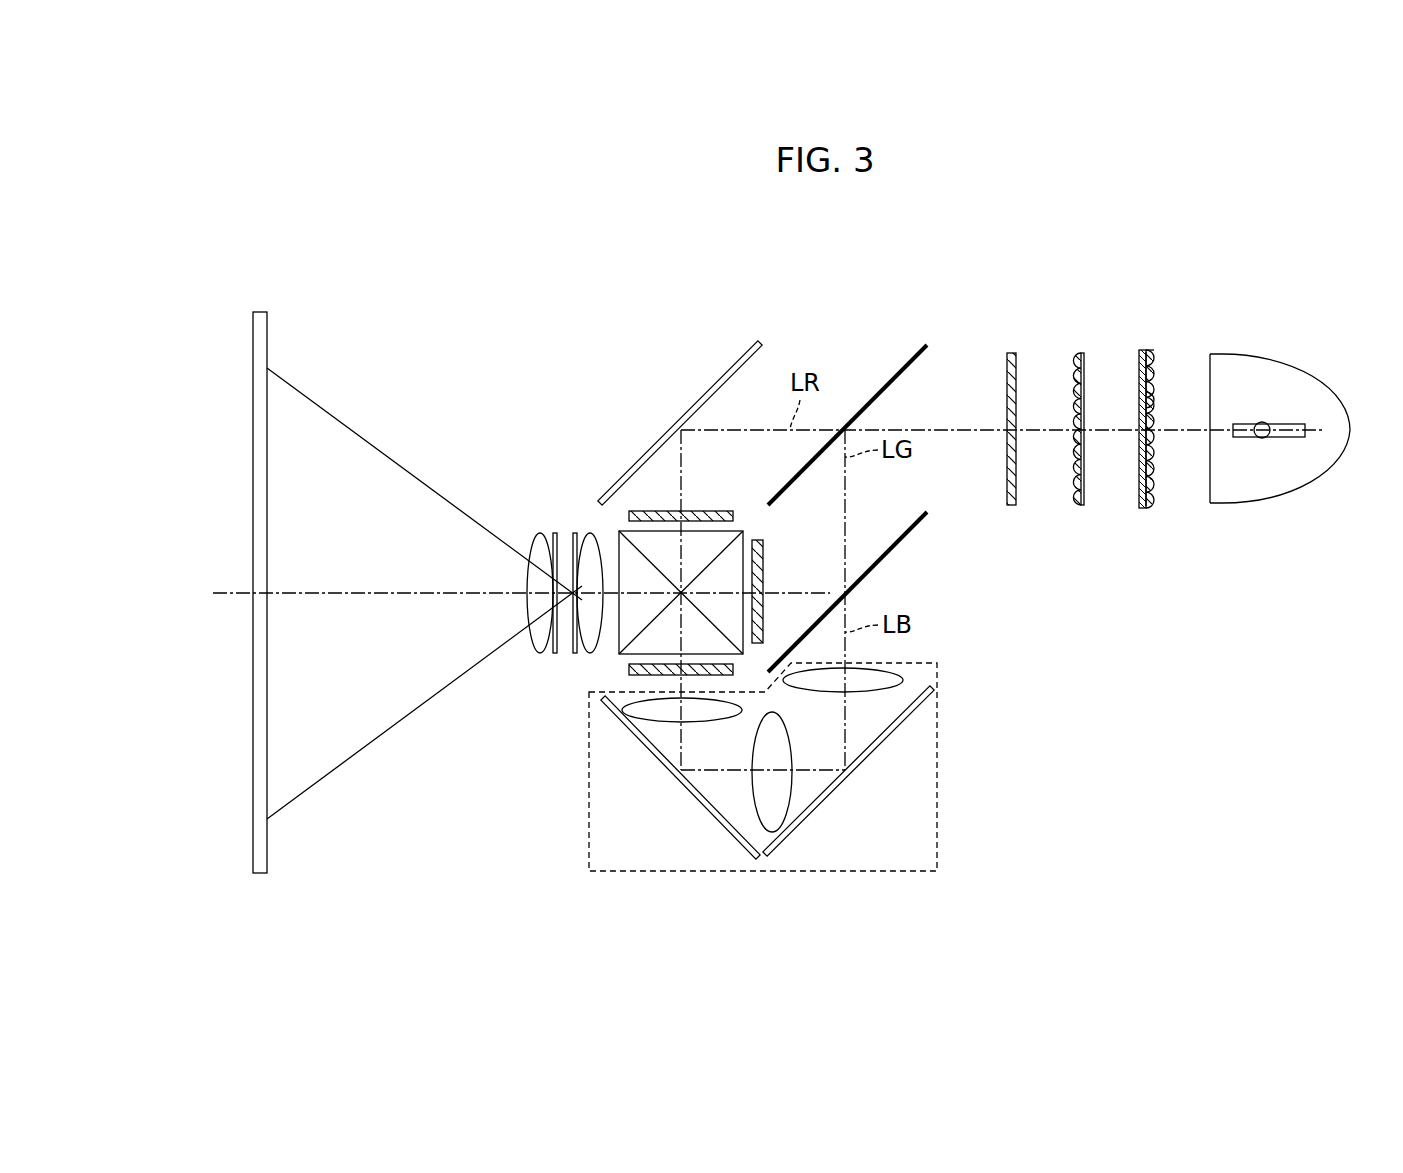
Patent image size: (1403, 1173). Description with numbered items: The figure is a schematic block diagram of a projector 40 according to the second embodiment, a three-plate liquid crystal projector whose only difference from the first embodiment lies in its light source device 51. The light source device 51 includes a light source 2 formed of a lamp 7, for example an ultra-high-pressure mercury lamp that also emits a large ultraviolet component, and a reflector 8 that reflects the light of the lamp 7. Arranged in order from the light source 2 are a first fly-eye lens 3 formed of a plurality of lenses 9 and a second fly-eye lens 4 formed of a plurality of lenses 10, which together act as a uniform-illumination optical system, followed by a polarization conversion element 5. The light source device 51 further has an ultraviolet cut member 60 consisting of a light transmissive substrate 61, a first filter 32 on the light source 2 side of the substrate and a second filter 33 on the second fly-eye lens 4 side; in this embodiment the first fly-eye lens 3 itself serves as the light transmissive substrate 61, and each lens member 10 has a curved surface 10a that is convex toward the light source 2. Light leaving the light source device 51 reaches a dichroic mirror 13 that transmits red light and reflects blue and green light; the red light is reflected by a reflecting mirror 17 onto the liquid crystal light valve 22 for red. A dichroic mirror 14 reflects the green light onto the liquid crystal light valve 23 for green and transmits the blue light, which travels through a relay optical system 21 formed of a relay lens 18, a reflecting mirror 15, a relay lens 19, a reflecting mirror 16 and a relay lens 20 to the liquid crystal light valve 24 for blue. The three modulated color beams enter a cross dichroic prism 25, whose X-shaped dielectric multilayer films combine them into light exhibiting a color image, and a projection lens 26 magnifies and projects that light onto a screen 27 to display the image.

The light source 2 is at (1280, 405).
The first fly-eye lens 3 is at (1173, 452).
The second fly-eye lens 4 is at (1064, 419).
The polarization conversion element 5 is at (1010, 353).
The lamp 7 is at (1262, 440).
The reflector 8 is at (1310, 470).
The lenses 9 is at (1078, 505).
The lenses 10 is at (1150, 352).
The curved surface 10a is at (1154, 400).
The dichroic mirror 13 is at (895, 373).
The dichroic mirror 14 is at (898, 515).
The reflecting mirror 15 is at (898, 720).
The reflecting mirror 16 is at (695, 792).
The reflecting mirror 17 is at (716, 386).
The relay lens 18 is at (893, 683).
The relay lens 19 is at (783, 790).
The relay lens 20 is at (650, 715).
The relay optical system 21 is at (937, 812).
The liquid crystal light valve 22 is at (703, 511).
The liquid crystal light valve 23 is at (764, 555).
The liquid crystal light valve 24 is at (640, 672).
The cross dichroic prism 25 is at (617, 633).
The projection lens 26 is at (523, 527).
The screen 27 is at (262, 795).
The first filter 32 is at (1156, 490).
The second filter 33 is at (1141, 508).
The projector 40 is at (780, 277).
The light source device 51 is at (1098, 275).
The ultraviolet cut member 60 is at (1213, 594).
The light transmissive substrate 61 is at (1150, 508).